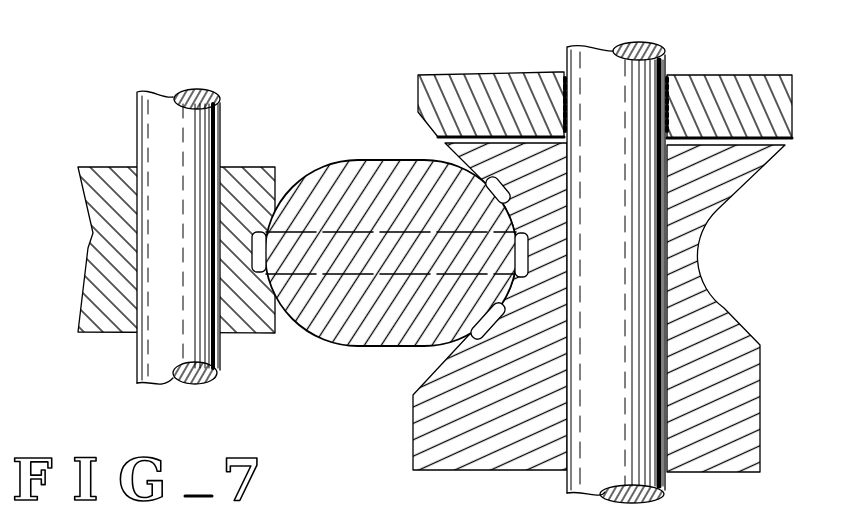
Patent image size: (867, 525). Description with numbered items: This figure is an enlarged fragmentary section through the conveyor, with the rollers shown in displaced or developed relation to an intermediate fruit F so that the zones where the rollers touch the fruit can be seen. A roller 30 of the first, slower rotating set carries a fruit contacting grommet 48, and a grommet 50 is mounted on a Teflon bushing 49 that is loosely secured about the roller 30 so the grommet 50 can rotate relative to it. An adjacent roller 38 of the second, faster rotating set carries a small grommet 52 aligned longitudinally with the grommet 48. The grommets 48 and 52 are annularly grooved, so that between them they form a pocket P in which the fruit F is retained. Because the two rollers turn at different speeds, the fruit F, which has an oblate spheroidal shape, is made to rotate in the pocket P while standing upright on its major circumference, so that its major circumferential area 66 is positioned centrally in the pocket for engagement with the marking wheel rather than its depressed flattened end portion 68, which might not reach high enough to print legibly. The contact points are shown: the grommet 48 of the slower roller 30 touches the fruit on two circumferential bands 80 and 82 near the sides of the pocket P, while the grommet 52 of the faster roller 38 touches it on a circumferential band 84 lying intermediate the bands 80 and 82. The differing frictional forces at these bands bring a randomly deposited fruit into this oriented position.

The roller 30 is at (612, 55).
The roller 38 is at (147, 128).
The grommet 48 is at (697, 255).
The Teflon bushing 49 is at (668, 76).
The grommet 50 is at (460, 77).
The grommet 52 is at (95, 227).
The major circumferential area 66 is at (528, 256).
The depressed flattened end portion 68 is at (360, 160).
The circumferential band 80 is at (498, 332).
The circumferential band 82 is at (503, 182).
The circumferential band 84 is at (258, 260).
The fruit F is at (335, 160).
The pocket P is at (316, 360).